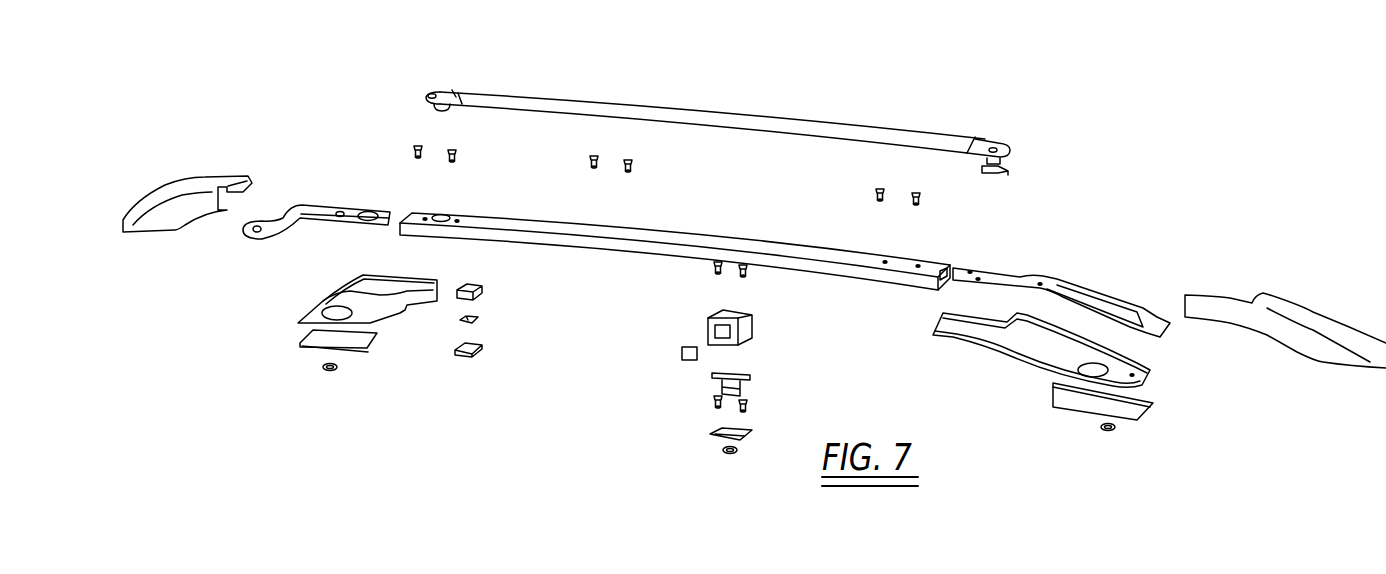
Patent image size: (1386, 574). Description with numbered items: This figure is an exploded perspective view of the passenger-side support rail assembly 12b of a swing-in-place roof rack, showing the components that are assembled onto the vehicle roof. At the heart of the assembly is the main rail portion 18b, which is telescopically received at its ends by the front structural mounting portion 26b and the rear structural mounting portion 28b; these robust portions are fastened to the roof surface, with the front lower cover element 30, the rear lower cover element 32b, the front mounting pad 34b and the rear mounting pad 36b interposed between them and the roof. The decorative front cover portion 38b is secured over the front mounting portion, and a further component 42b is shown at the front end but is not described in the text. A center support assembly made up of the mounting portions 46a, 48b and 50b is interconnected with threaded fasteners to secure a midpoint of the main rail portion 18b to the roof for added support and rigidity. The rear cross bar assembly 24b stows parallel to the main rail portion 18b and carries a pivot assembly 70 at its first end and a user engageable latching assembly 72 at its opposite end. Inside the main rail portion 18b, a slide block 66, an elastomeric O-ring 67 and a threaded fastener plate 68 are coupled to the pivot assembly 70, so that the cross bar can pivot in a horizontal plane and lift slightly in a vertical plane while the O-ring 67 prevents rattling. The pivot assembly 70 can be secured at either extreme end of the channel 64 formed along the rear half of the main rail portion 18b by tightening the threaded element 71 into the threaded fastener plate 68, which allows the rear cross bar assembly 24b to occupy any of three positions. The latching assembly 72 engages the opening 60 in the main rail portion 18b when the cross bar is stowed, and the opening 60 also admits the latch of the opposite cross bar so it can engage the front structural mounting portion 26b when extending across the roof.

The support rail assembly 12b is at (1128, 117).
The main rail portion 18b is at (685, 230).
The rear cross bar assembly 24b is at (653, 106).
The front structural mounting portion 26b is at (1080, 296).
The rear structural mounting portion 28b is at (283, 218).
The front lower cover element 30 is at (992, 347).
The rear lower cover element 32b is at (325, 294).
The front mounting pad 34b is at (1143, 412).
The rear mounting pad 36b is at (308, 335).
The decorative front cover portion 38b is at (1321, 323).
The front end cap 42b is at (165, 192).
The center support assembly mounting portion 46a is at (741, 386).
The center support assembly mounting portion 48b is at (733, 312).
The center support assembly mounting portion 50b is at (712, 432).
The opening 60 is at (908, 263).
The channel 64 is at (487, 220).
The slide block 66 is at (485, 288).
The elastomeric O-ring 67 is at (478, 318).
The threaded fastener plate 68 is at (480, 353).
The pivot assembly 70 is at (452, 92).
The threaded element 71 is at (432, 92).
The latching assembly 72 is at (985, 146).